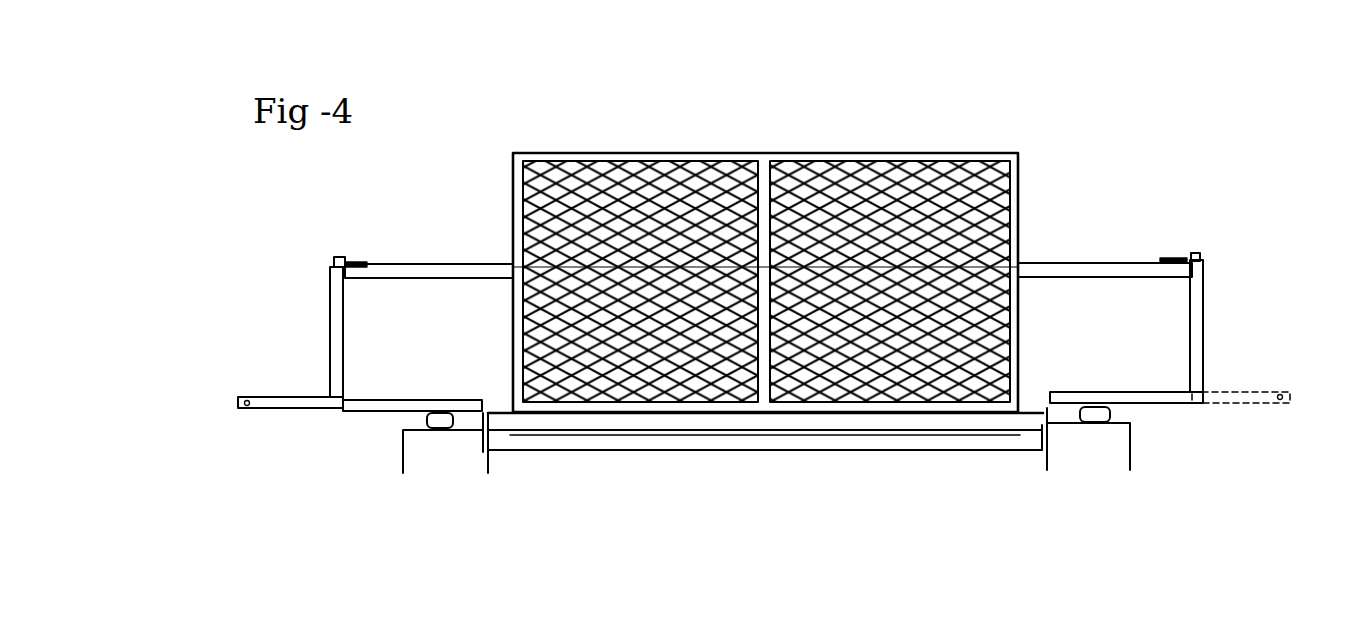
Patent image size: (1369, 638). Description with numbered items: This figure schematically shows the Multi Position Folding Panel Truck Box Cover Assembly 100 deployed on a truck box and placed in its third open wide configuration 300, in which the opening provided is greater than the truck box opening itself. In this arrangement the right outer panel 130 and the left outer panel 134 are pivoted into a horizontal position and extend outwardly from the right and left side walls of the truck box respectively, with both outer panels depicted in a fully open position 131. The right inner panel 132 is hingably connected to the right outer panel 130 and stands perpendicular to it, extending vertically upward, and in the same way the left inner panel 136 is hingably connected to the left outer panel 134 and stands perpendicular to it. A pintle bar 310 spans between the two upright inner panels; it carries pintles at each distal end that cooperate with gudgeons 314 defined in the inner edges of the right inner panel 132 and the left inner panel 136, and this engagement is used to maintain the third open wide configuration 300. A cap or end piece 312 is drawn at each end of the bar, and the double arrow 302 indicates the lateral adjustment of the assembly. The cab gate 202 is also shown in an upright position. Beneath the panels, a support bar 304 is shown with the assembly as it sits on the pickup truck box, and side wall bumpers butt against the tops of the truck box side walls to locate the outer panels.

The Multi Position Folding Panel Truck Box Cover Assembly 100 is at (703, 125).
The cab gate 202 is at (822, 195).
The third open wide configuration 300 is at (1083, 155).
The lateral adjustment direction 302 is at (403, 233).
The support bar 304 is at (278, 408).
The pintle bar 310 is at (1100, 263).
The end connector 312 is at (345, 262).
The gudgeons 314 is at (330, 270).
The right outer panel 130 is at (1160, 405).
The fully open position 131 is at (358, 420).
The right inner panel 132 is at (1203, 328).
The left outer panel 134 is at (378, 411).
The left inner panel 136 is at (330, 333).